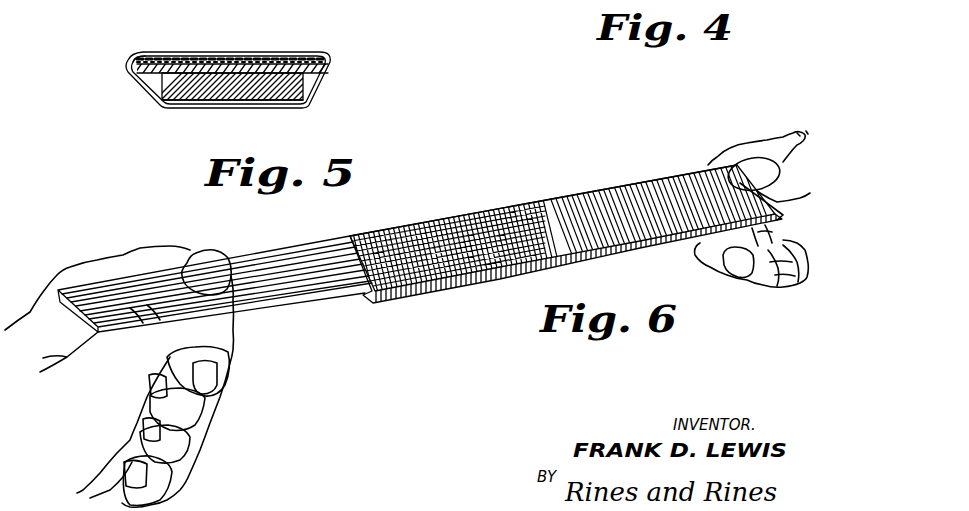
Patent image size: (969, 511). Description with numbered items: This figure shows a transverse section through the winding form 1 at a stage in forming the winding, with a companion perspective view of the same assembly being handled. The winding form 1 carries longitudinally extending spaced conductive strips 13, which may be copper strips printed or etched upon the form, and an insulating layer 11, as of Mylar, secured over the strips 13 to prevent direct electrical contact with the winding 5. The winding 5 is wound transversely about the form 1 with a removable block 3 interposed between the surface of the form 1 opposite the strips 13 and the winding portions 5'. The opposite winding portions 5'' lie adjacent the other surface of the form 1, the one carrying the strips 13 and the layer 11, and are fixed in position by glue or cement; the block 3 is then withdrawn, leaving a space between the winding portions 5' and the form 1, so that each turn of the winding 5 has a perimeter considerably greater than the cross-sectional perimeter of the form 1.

In FIG. 5, the winding form 1 is at (325, 77).
In FIG. 6, the winding form 1 is at (387, 305).
In FIG. 5, the removable block 3 is at (290, 100).
In FIG. 6, the removable block 3 is at (293, 305).
In FIG. 5, the winding 5 is at (251, 67).
In FIG. 6, the winding 5 is at (543, 194).
In FIG. 5, the winding portions 5' is at (233, 115).
In FIG. 5, the opposite winding portions 5'' is at (231, 40).
In FIG. 5, the insulating layer 11 is at (323, 54).
In FIG. 6, the insulating layer 11 is at (367, 299).
In FIG. 5, the conductive strips 13 is at (297, 54).